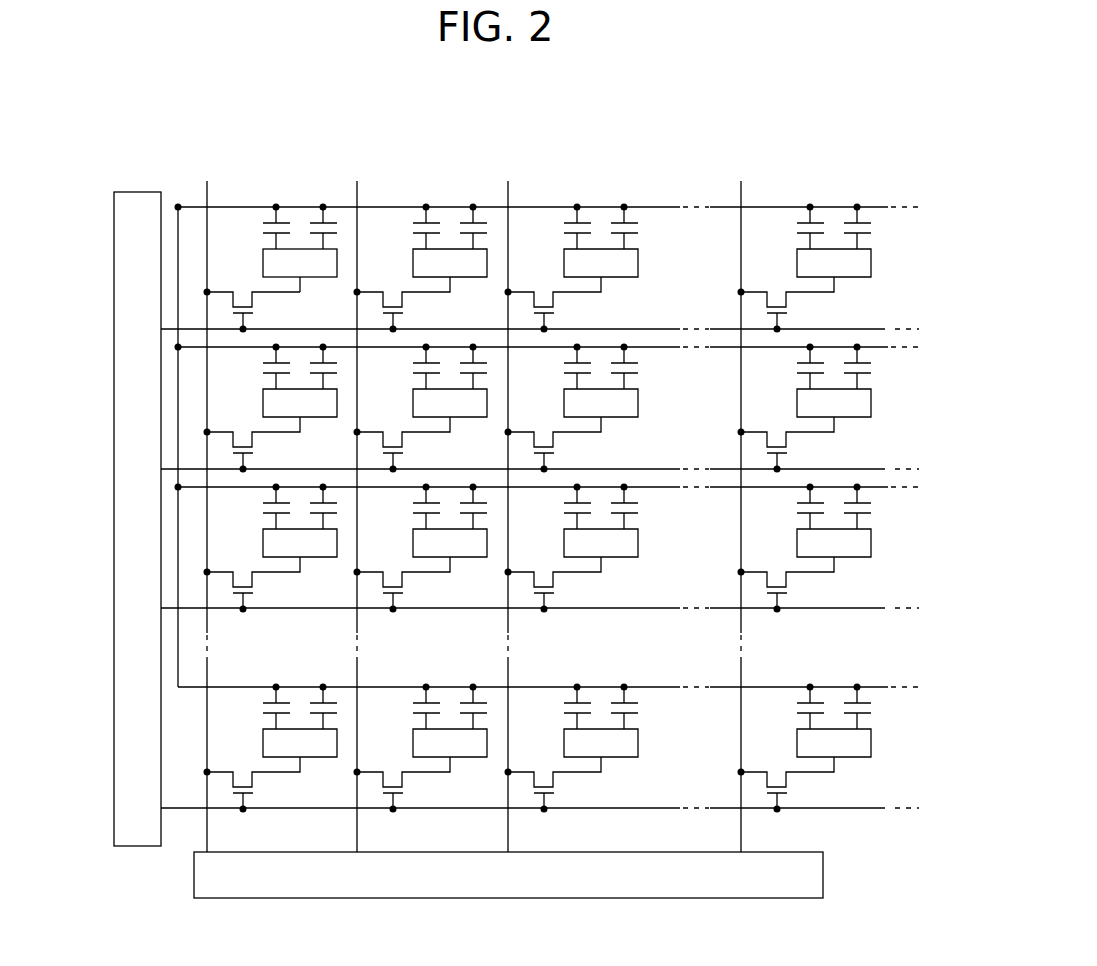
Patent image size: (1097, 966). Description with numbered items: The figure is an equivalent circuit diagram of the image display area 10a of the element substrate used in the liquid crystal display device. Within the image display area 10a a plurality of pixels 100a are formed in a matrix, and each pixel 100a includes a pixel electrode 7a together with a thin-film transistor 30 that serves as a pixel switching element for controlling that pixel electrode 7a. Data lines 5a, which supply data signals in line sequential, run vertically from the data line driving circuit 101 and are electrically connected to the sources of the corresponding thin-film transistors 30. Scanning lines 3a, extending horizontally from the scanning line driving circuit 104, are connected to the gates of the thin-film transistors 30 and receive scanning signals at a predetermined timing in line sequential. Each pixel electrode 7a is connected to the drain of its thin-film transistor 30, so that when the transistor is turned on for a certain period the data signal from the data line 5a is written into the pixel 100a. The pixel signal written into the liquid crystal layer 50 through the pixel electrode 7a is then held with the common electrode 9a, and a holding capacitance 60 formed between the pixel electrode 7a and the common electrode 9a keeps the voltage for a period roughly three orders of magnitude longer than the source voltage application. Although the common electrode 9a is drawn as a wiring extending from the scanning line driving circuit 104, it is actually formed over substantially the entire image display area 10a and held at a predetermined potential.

The scanning line 3a is at (878, 329).
The data line 5a is at (207, 181).
The common electrode 9a is at (413, 207).
The image display area 10a is at (849, 187).
The thin-film transistor 30 is at (253, 299).
The liquid crystal layer 50 is at (337, 228).
The holding capacitance 60 is at (265, 230).
The pixel electrode 7a is at (322, 278).
The pixel 100a is at (320, 205).
The data line driving circuit 101 is at (204, 882).
The scanning line driving circuit 104 is at (125, 809).